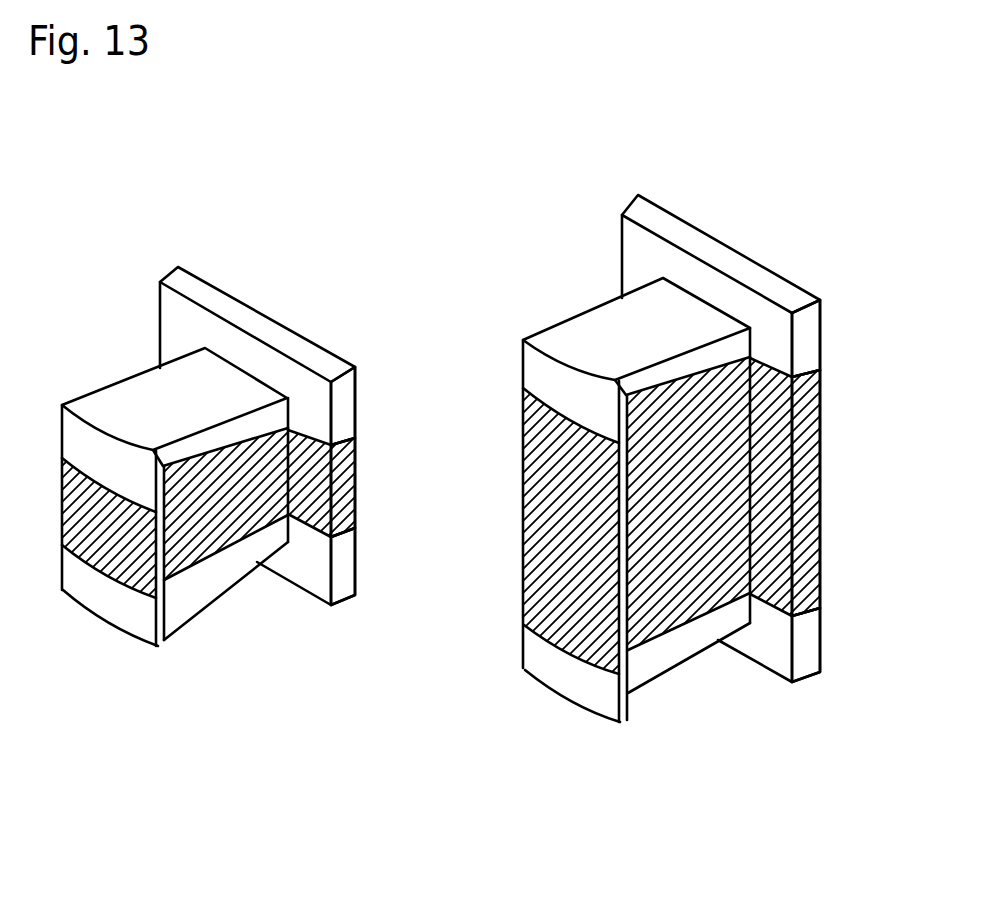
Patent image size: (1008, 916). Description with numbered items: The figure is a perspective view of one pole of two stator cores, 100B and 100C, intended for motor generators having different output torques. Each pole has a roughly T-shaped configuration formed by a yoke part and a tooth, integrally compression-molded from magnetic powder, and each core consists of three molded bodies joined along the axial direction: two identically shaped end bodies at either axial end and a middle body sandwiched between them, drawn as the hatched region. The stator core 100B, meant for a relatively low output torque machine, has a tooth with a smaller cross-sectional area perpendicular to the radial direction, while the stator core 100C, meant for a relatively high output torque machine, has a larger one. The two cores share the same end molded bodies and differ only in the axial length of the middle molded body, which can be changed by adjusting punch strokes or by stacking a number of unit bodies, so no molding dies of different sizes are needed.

The stator core 100B is at (110, 277).
The stator core 100C is at (586, 185).